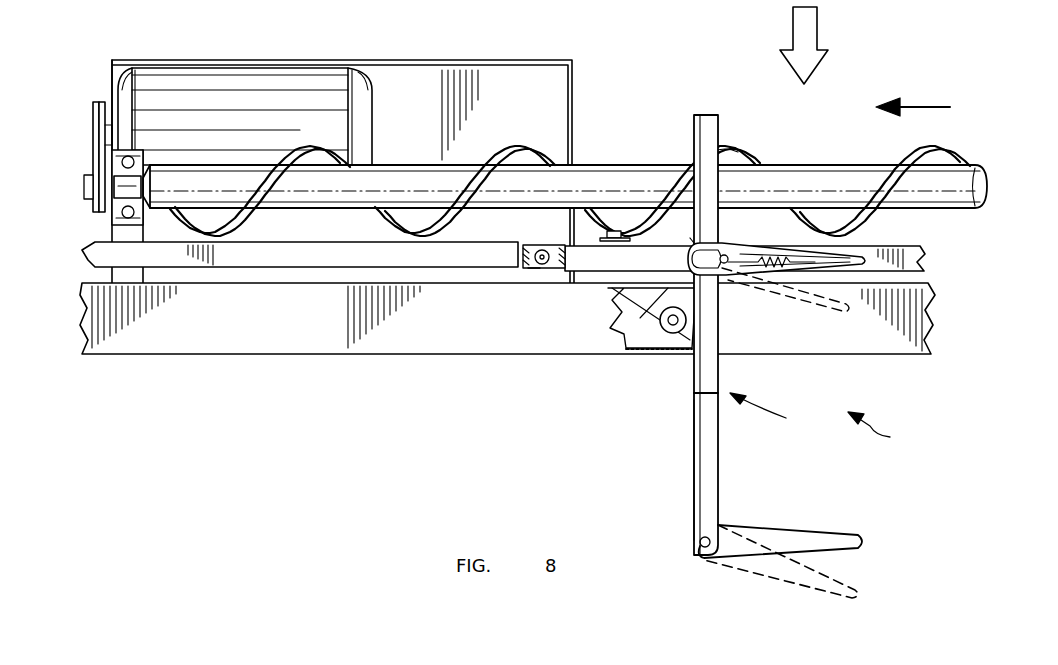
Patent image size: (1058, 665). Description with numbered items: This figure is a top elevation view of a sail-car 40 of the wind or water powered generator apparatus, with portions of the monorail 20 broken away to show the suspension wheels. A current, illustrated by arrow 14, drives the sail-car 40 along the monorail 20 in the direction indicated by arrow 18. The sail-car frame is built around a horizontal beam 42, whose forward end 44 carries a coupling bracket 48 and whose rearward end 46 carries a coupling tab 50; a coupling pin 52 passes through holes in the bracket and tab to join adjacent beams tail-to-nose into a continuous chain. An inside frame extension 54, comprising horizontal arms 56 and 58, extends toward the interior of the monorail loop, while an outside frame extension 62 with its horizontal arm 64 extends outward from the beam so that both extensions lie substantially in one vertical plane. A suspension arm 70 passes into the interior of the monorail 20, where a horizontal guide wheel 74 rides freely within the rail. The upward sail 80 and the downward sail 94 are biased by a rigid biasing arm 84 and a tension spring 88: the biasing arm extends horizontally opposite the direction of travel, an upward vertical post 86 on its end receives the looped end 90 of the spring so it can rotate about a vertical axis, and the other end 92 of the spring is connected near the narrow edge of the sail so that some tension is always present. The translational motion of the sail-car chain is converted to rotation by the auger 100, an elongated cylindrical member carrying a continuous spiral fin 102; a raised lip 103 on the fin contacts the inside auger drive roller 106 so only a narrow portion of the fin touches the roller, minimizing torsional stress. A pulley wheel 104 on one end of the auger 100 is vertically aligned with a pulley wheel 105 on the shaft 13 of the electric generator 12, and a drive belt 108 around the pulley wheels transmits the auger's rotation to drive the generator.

The electric generator 12 is at (242, 82).
The pulley wheel 105 is at (88, 137).
The shaft 13 is at (90, 137).
The drive belt 108 is at (105, 148).
The pulley wheel 104 is at (95, 210).
The auger 100 is at (388, 186).
The spiral fin 102 is at (520, 150).
The raised lip 103 is at (738, 156).
The outside frame extension 62 is at (699, 318).
The horizontal arm 64 is at (700, 158).
The arrow 14 is at (800, 30).
The arrows 18 is at (905, 106).
The horizontal beam 42 is at (530, 245).
The rearward end 46 is at (504, 258).
The forward end 44 is at (580, 254).
The coupling bracket 48 is at (553, 270).
The coupling pin 52 is at (538, 250).
The coupling tab 50 is at (530, 270).
The inside auger drive roller 106 is at (595, 236).
The monorail 20 is at (226, 332).
The suspension arm 70 is at (618, 318).
The horizontal guide wheel 74 is at (664, 340).
The horizontal arm 56 is at (707, 338).
The horizontal arm 58 is at (706, 470).
The downward sail 94 is at (780, 540).
The upward sail 80 is at (765, 265).
The rigid biasing arm 84 is at (694, 258).
The upward vertical post 86 is at (692, 241).
The tension spring 88 is at (762, 256).
The end of tension spring 92 is at (810, 258).
The end of tension spring 90 is at (726, 274).
The inside frame extension 54 is at (771, 411).
The sail-car 40 is at (883, 431).